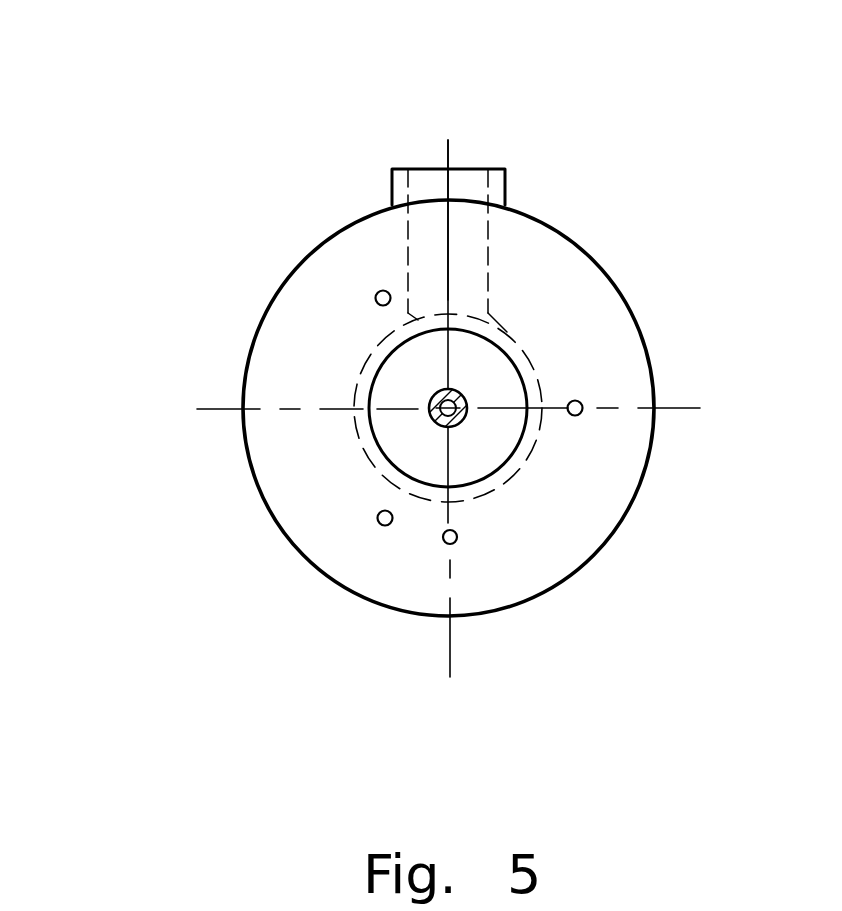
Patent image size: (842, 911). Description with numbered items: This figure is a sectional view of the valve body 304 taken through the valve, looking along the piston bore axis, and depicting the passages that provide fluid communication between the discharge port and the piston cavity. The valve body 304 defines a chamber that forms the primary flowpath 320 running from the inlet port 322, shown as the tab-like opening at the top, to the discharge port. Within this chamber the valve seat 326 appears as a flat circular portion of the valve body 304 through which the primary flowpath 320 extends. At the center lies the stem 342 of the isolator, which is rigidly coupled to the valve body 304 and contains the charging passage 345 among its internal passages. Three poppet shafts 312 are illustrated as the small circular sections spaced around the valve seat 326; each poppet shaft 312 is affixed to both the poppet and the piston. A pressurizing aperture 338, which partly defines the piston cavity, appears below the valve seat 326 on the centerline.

The valve body 304 is at (580, 243).
The poppet shaft 312 is at (375, 300).
The primary flowpath 320 is at (428, 190).
The inlet port 322 is at (471, 166).
The valve seat 326 is at (515, 468).
The pressurizing aperture 338 is at (457, 538).
The stem 342 is at (430, 399).
The charging passage 345 is at (430, 405).